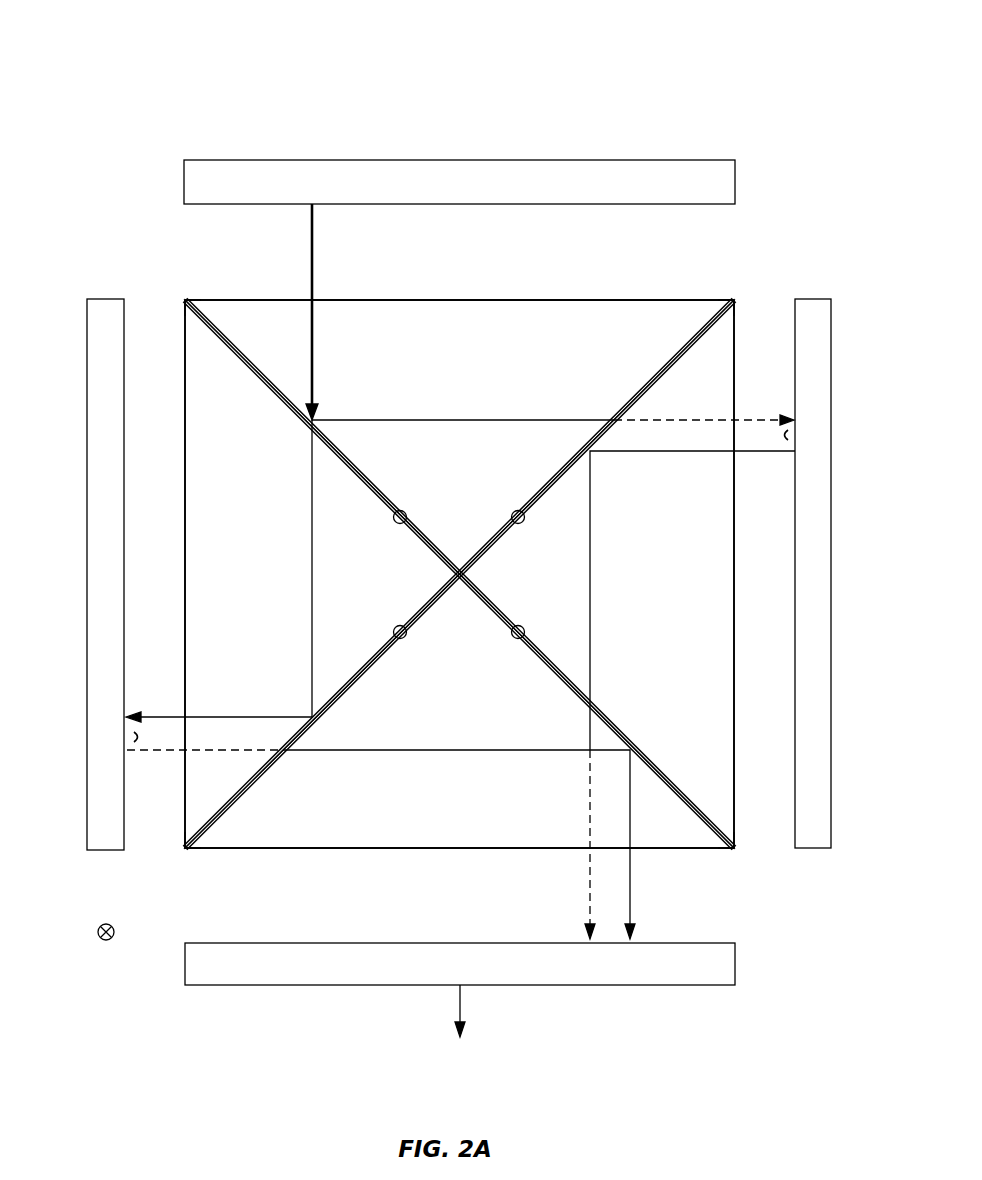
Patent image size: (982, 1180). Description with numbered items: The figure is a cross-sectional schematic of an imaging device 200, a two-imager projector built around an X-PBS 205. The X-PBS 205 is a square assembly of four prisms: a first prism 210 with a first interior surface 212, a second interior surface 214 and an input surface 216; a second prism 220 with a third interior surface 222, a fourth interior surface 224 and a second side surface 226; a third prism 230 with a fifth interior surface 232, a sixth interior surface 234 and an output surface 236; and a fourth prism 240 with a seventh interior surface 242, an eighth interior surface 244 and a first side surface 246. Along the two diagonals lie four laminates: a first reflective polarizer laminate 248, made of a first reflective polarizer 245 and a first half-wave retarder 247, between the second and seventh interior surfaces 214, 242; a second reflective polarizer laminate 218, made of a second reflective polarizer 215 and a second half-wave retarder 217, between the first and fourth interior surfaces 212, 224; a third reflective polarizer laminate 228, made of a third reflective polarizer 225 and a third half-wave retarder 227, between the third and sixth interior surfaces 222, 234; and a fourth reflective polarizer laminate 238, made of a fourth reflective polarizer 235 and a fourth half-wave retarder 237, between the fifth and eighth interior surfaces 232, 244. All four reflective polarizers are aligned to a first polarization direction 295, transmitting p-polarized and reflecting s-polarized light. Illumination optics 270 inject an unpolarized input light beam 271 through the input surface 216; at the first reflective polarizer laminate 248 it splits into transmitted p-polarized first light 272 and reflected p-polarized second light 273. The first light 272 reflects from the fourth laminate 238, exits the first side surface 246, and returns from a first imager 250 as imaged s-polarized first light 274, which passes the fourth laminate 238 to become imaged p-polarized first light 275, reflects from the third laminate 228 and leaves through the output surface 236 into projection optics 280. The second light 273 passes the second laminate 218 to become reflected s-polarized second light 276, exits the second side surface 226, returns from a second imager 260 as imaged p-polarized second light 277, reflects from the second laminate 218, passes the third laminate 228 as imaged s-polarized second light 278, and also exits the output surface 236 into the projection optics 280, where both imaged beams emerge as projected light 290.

The imaging device 200 is at (191, 85).
The X-PBS 205 is at (168, 248).
The first prism 210 is at (692, 313).
The first interior surface 212 is at (722, 305).
The second interior surface 214 is at (195, 300).
The second reflective polarizer 215 is at (736, 299).
The input surface 216 is at (652, 299).
The second half-wave retarder 217 is at (723, 318).
The second reflective polarizer laminate 218 is at (513, 510).
The second prism 220 is at (722, 805).
The third interior surface 222 is at (735, 848).
The fourth interior surface 224 is at (738, 315).
The third reflective polarizer 225 is at (735, 848).
The second side surface 226 is at (735, 755).
The third half-wave retarder 227 is at (735, 849).
The third reflective polarizer laminate 228 is at (513, 640).
The third prism 230 is at (245, 833).
The fifth interior surface 232 is at (217, 828).
The sixth interior surface 234 is at (712, 840).
The fourth reflective polarizer 235 is at (185, 850).
The output surface 236 is at (670, 852).
The fourth half-wave retarder 237 is at (188, 841).
The fourth reflective polarizer laminate 238 is at (407, 640).
The fourth prism 240 is at (197, 352).
The seventh interior surface 242 is at (195, 320).
The eighth interior surface 244 is at (218, 810).
The first reflective polarizer 245 is at (183, 298).
The first side surface 246 is at (185, 410).
The first half-wave retarder 247 is at (210, 318).
The first reflective polarizer laminate 248 is at (406, 510).
The first imager 250 is at (108, 298).
The second imager 260 is at (813, 295).
The illumination optics 270 is at (735, 182).
The unpolarized input light beam 271 is at (313, 240).
The transmitted p-polarized first light 272 is at (312, 572).
The reflected p-polarized second light 273 is at (492, 420).
The imaged s-polarized first light 274 is at (218, 748).
The imaged p-polarized first light 275 is at (412, 750).
The reflected s-polarized second light 276 is at (670, 422).
The imaged p-polarized second light 277 is at (590, 588).
The imaged s-polarized second light 278 is at (590, 803).
The projection optics 280 is at (735, 965).
The projected light 290 is at (462, 1005).
The first polarization direction 295 is at (108, 940).